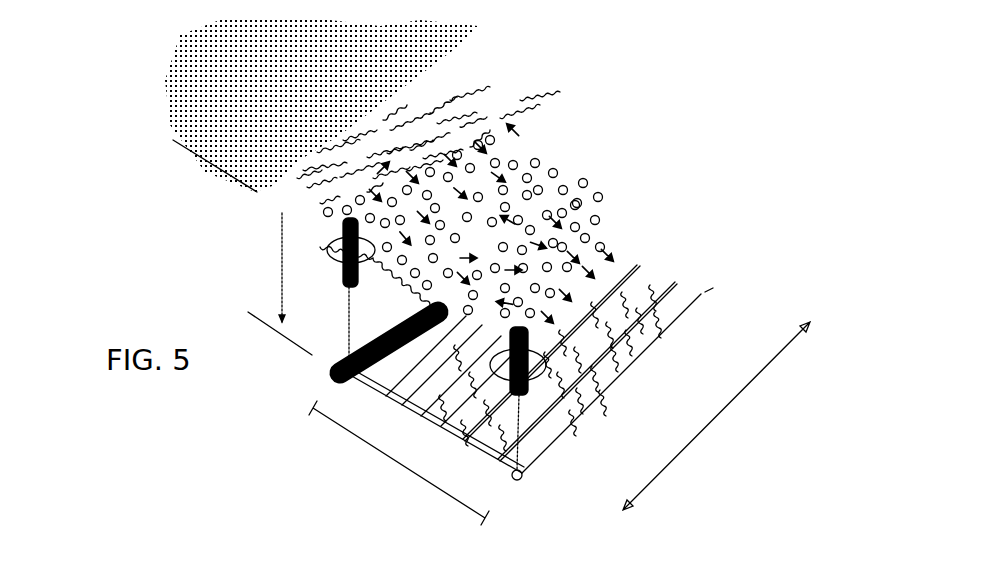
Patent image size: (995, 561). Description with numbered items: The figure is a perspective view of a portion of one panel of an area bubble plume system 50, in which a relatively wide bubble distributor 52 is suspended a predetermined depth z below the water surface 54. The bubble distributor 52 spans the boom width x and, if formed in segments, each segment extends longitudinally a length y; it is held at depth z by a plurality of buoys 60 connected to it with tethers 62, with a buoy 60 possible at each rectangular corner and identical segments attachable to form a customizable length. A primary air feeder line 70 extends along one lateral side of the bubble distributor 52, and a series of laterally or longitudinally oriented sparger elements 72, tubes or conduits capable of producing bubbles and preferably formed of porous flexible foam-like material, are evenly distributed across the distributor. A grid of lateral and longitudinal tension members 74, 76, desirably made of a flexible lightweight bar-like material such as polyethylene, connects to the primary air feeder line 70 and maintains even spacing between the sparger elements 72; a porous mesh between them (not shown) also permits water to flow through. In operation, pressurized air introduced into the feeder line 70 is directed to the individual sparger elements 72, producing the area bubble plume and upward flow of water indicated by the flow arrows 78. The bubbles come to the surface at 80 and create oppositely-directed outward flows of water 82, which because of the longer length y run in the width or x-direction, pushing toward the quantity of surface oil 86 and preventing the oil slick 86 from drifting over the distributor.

The area bubble plume system 50 is at (197, 293).
The bubble distributor 52 is at (383, 405).
The water surface 54 is at (313, 182).
The buoys 60 is at (337, 247).
The tethers 62 is at (350, 314).
The primary air feeder line 70 is at (345, 372).
The sparger elements 72 is at (437, 388).
The lateral tension members 74 is at (490, 458).
The longitudinal tension members 76 is at (543, 457).
The flow arrows 78 is at (630, 360).
The bubbles coming to the surface 80 is at (602, 197).
The outward flows of water 82 is at (553, 224).
The surface oil 86 is at (383, 65).